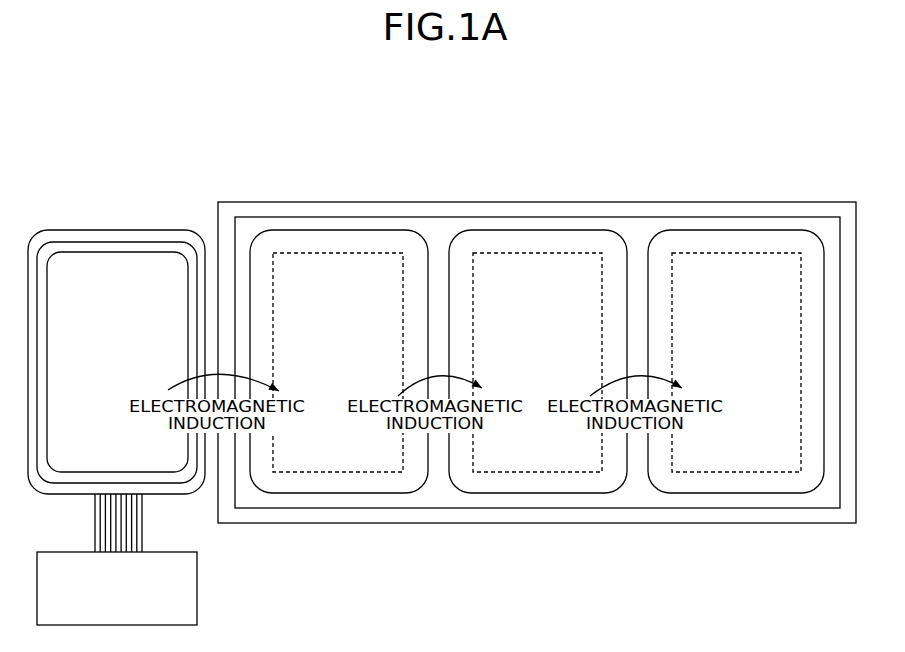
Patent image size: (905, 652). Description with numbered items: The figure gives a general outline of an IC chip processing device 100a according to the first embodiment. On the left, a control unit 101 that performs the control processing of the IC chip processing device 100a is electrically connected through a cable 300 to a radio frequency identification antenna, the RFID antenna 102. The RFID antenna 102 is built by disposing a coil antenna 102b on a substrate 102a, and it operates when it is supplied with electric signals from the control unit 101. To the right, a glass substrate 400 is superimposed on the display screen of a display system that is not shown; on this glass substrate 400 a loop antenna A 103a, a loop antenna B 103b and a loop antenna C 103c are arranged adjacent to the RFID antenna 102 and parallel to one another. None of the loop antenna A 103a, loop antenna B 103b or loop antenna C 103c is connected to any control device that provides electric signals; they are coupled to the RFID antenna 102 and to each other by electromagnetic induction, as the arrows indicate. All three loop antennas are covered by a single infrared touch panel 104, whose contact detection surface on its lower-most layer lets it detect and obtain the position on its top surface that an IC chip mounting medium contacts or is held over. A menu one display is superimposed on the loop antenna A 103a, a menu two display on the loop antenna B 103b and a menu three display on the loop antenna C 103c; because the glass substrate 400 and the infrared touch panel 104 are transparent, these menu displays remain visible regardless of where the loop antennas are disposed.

The IC chip processing device 100a is at (760, 85).
The control unit 101 is at (197, 588).
The RFID antenna 102 is at (133, 232).
The substrate 102a is at (86, 238).
The coil antenna 102b is at (176, 244).
The loop antenna A 103a is at (334, 233).
The loop antenna B 103b is at (533, 233).
The loop antenna C 103c is at (730, 233).
The infrared touch panel 104 is at (553, 502).
The cable 300 is at (142, 517).
The glass substrate 400 is at (763, 517).